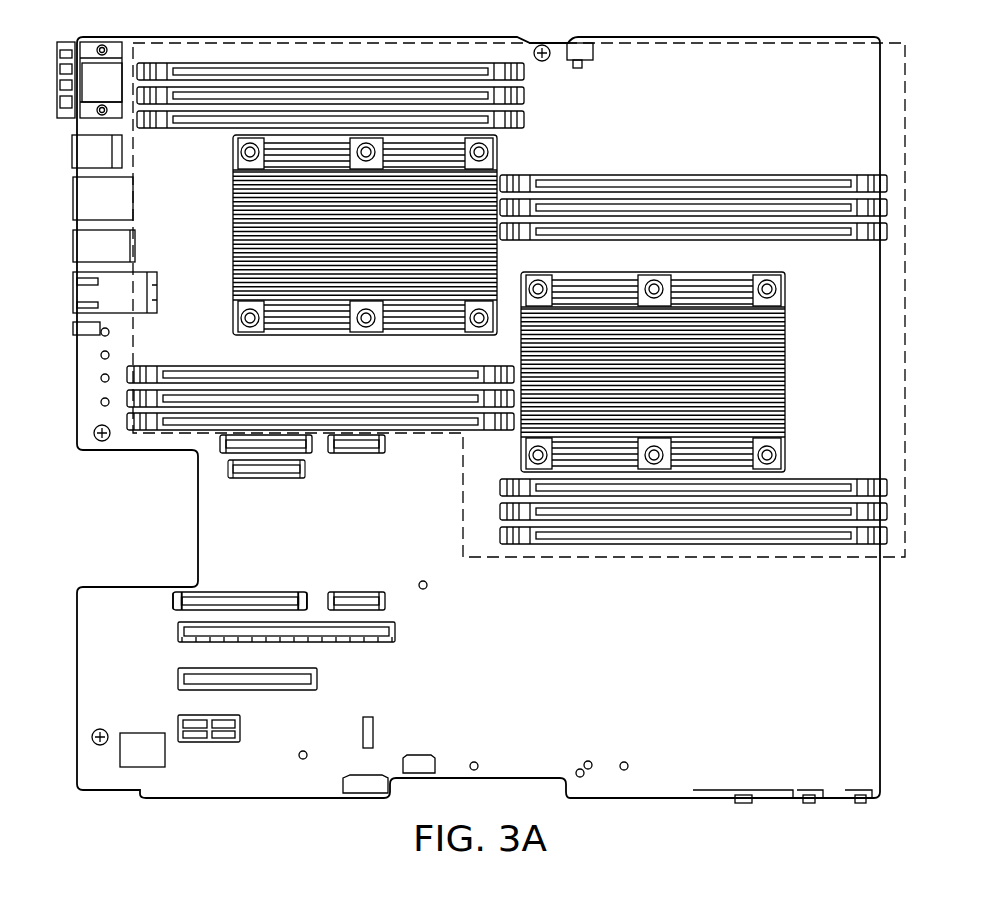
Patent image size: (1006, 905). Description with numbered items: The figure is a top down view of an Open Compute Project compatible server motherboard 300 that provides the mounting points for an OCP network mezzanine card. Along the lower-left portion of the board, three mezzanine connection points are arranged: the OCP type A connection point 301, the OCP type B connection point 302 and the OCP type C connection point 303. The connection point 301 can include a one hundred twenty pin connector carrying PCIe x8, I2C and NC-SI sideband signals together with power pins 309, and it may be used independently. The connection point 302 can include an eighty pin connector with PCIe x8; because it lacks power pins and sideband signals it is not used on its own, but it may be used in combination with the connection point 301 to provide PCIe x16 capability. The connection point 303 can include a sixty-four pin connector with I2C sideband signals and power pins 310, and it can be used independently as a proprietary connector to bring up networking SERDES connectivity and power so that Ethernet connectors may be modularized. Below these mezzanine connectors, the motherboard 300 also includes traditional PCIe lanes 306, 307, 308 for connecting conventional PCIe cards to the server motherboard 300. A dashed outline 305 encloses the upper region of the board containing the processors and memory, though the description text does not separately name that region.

The server motherboard 300 is at (870, 672).
The OCP type A connection point 301 is at (240, 592).
The OCP type B connection point 302 is at (220, 447).
The OCP type C connection point 303 is at (265, 478).
The processor and memory region 305 is at (906, 101).
The PCIe lane 306 is at (235, 742).
The PCIe lane 307 is at (178, 675).
The PCIe lane 308 is at (178, 630).
The power pins 309 is at (358, 592).
The power pins 310 is at (356, 453).